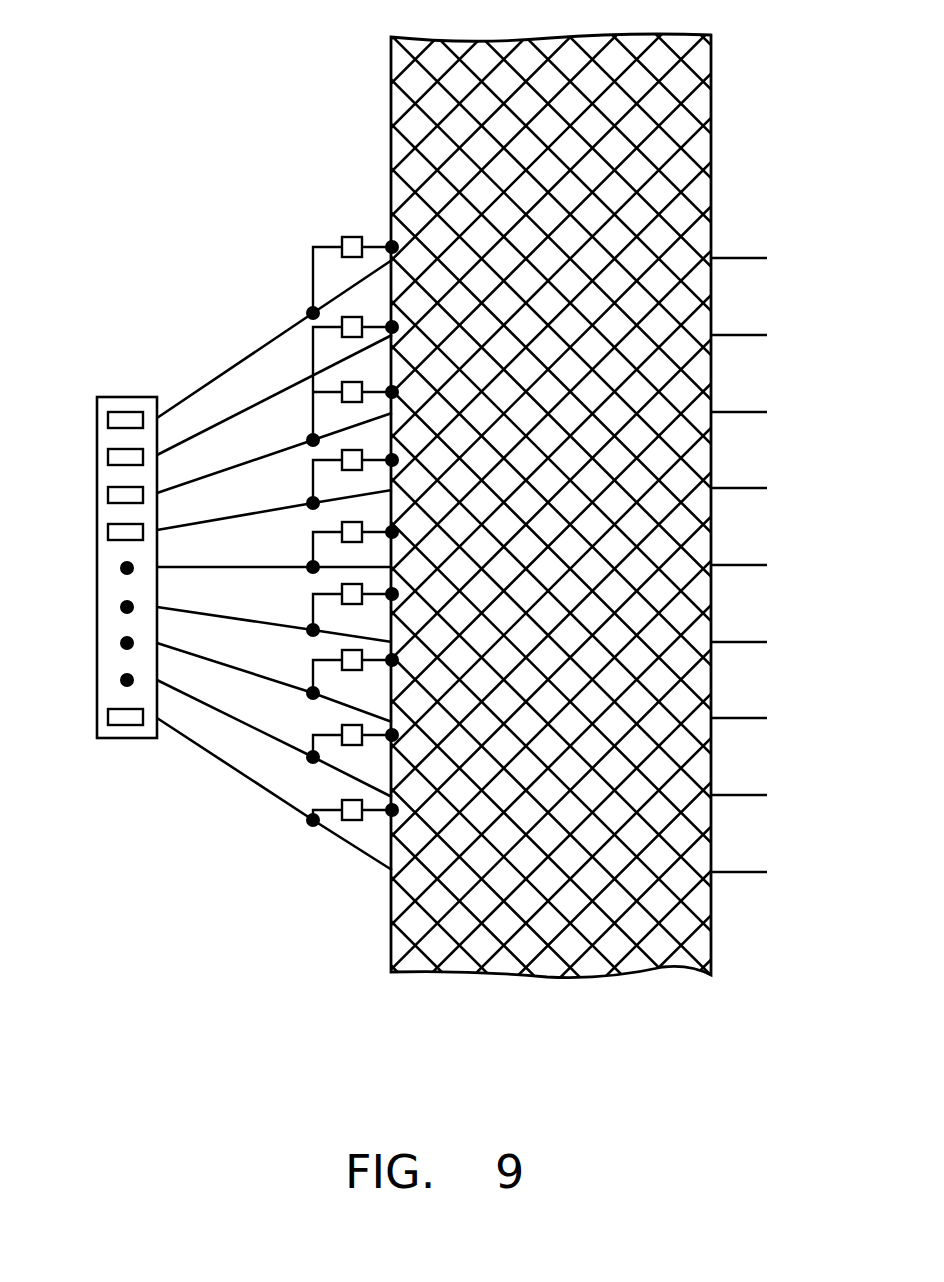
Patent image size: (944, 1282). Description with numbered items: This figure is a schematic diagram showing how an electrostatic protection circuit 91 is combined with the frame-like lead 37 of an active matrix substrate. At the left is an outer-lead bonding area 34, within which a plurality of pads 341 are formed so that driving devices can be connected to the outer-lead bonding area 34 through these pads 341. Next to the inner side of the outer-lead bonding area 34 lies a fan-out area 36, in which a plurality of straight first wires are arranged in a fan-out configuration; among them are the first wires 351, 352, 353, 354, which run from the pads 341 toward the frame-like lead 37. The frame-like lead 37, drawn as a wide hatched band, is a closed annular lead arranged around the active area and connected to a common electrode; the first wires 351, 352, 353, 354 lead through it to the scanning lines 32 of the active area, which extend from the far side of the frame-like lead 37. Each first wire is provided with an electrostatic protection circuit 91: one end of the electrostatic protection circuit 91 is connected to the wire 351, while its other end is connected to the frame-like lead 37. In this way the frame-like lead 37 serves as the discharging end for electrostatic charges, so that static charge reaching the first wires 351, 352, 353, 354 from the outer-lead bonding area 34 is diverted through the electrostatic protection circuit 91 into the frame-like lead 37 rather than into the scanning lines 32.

The scanning line 32 is at (745, 258).
The outer-lead bonding area 34 is at (98, 582).
The pad 341 is at (122, 422).
The fan-out area 36 is at (274, 557).
The first wire 351 is at (215, 378).
The first wire 352 is at (225, 418).
The first wire 353 is at (222, 470).
The first wire 354 is at (220, 522).
The frame-like lead 37 is at (683, 920).
The electrostatic protection circuit 91 is at (345, 237).